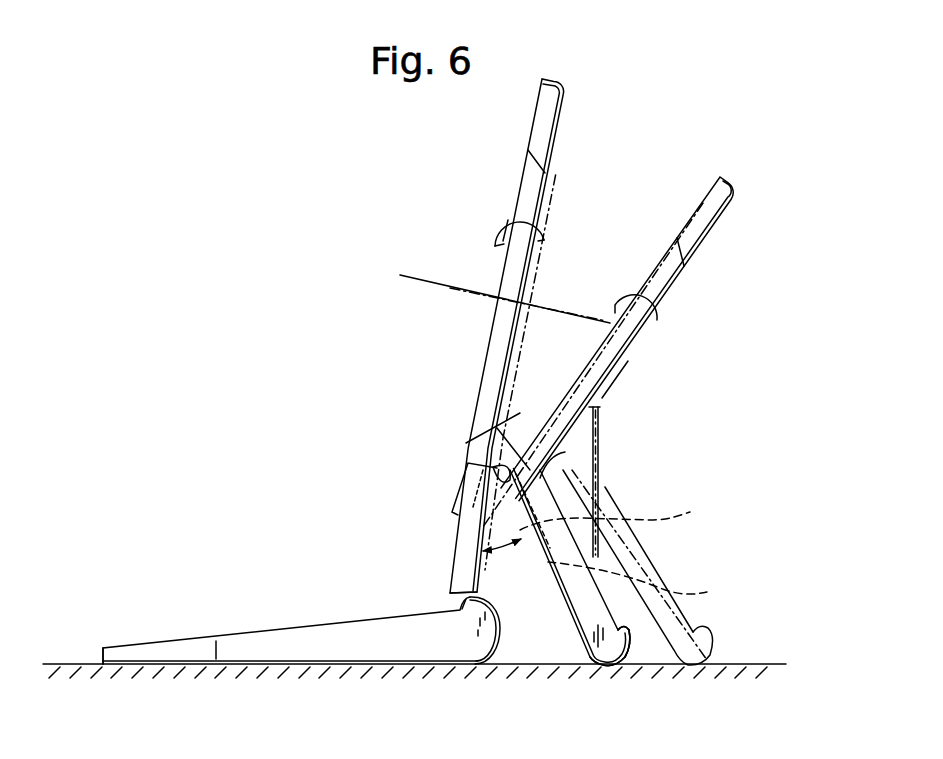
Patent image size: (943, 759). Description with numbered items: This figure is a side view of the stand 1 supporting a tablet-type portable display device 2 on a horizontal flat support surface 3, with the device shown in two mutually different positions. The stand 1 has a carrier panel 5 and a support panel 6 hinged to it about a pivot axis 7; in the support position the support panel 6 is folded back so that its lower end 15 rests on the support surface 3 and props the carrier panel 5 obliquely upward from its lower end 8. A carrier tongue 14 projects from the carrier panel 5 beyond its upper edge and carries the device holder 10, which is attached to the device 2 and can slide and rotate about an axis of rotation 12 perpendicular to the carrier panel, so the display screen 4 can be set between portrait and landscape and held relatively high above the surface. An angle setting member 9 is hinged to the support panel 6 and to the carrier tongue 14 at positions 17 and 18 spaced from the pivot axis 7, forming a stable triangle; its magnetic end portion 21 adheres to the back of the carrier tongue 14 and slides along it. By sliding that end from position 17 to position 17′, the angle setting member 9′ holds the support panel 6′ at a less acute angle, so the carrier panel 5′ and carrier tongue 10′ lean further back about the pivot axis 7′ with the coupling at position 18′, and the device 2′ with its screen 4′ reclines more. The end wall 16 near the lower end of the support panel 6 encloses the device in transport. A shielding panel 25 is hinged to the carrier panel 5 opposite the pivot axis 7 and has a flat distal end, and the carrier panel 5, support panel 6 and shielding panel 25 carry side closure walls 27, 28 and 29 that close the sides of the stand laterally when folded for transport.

The stand 1 is at (719, 407).
The portable display device 2 is at (565, 108).
The portable display device in more inclined position 2′ is at (723, 222).
The support surface 3 is at (760, 664).
The display screen 4 is at (495, 245).
The display screen in more inclined position 4′ is at (651, 288).
The carrier panel 5 is at (479, 582).
The carrier panel in more inclined position 5′ is at (498, 573).
The support panel 6 is at (573, 628).
The support panel in adjusted position 6′ is at (636, 615).
The pivot axis 7 is at (492, 466).
The pivot axis in adjusted position 7′ is at (562, 456).
The lower end of carrier panel 8 is at (466, 600).
The angle setting member 9 is at (615, 517).
The angle setting member in adjusted orientation 9′ is at (598, 473).
The device holder 10 is at (545, 196).
The carrier tongue in more inclined position 10′ is at (669, 298).
The axis of rotation 12 is at (441, 282).
The carrier tongue 14 is at (514, 359).
The lower end of support panel 15 is at (612, 640).
The end wall 16 is at (634, 636).
The hinge position on carrier tongue 17 is at (498, 430).
The adjusted hinge position on carrier tongue 17′ is at (596, 407).
The hinge position on support panel 18 is at (640, 565).
The hinge position on support panel in adjusted configuration 18′ is at (600, 556).
The end portion of angle setting member 21 is at (614, 373).
The shielding panel 25 is at (100, 648).
The side closure wall of carrier panel 27 is at (478, 553).
The side closure wall of support panel 28 is at (603, 641).
The side closure wall of shielding panel 29 is at (263, 645).